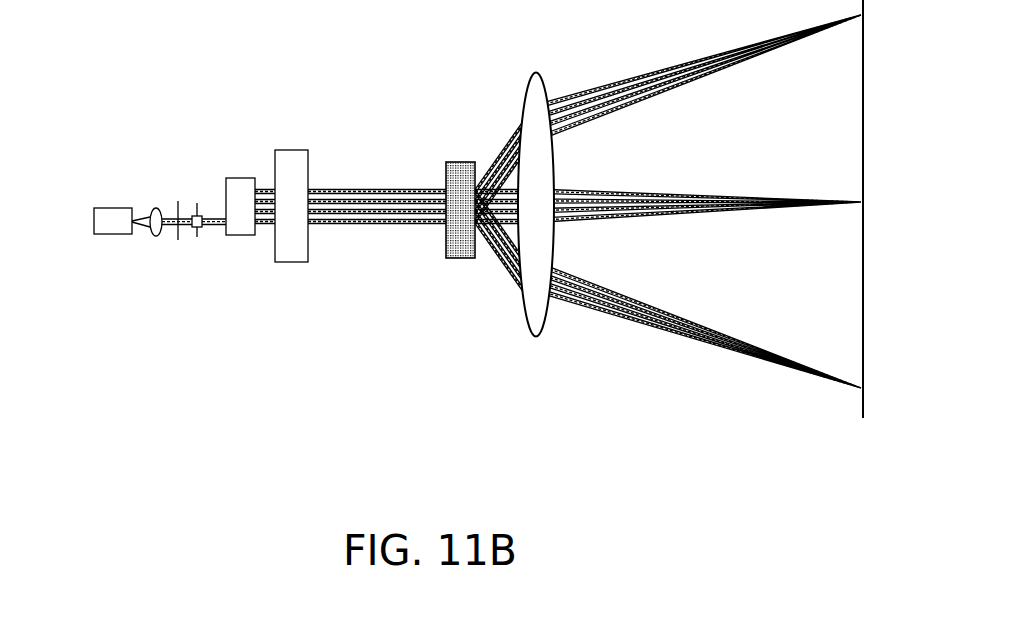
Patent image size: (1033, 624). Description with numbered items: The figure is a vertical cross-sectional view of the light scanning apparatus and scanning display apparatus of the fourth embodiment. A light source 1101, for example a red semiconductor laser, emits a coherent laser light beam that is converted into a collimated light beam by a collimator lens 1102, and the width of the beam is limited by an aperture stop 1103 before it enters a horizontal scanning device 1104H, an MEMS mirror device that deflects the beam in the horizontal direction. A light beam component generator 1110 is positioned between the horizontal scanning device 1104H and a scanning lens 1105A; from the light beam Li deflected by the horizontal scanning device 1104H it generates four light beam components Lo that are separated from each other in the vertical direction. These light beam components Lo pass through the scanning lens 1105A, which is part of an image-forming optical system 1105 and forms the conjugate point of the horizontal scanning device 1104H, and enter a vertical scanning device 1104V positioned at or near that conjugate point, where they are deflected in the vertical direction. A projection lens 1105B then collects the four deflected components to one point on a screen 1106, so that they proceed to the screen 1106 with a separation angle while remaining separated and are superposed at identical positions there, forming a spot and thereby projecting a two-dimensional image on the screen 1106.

The light source 1101 is at (108, 252).
The collimator lens 1102 is at (155, 250).
The aperture stop 1103 is at (179, 250).
The horizontal scanning device 1104H is at (194, 203).
The vertical scanning device 1104V is at (454, 150).
The light beam component generator 1110 is at (235, 165).
The image-forming optical system 1105 is at (425, 282).
The scanning lens 1105A is at (290, 280).
The projection lens 1105B is at (534, 251).
The screen 1106 is at (850, 147).
The light beam Li is at (210, 233).
The light beam components Lo is at (490, 262).